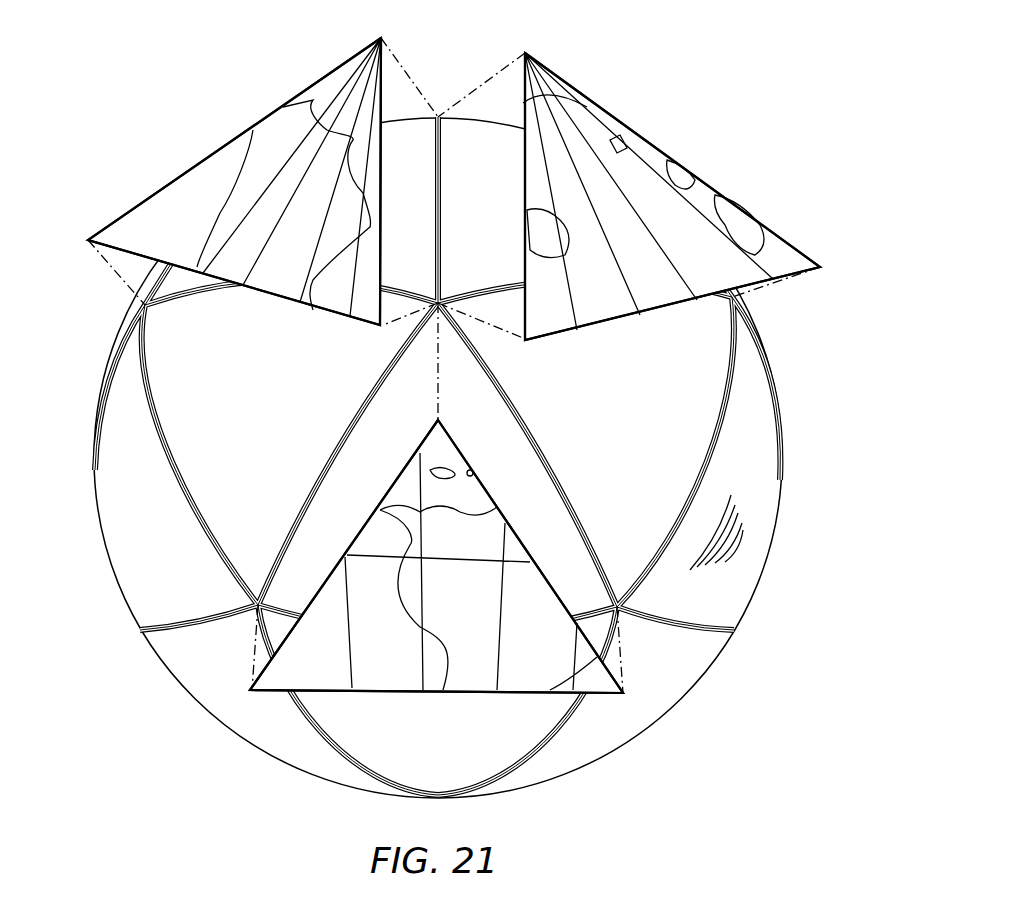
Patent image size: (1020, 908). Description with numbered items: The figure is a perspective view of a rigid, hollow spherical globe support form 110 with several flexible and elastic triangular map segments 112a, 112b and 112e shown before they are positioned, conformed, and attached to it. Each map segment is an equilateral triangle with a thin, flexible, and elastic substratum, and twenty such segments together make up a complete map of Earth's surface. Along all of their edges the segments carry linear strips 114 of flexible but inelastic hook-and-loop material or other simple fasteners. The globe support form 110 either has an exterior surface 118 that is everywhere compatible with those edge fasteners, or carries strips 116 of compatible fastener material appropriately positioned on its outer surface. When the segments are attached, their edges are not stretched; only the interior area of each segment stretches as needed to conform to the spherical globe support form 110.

The globe support form 110 is at (760, 420).
The map segment 112a is at (197, 178).
The map segment 112b is at (635, 137).
The map segment 112e is at (287, 668).
The linear strips 114 is at (381, 75).
The strips of compatible fastener material 116 is at (773, 697).
The exterior surface 118 is at (733, 543).